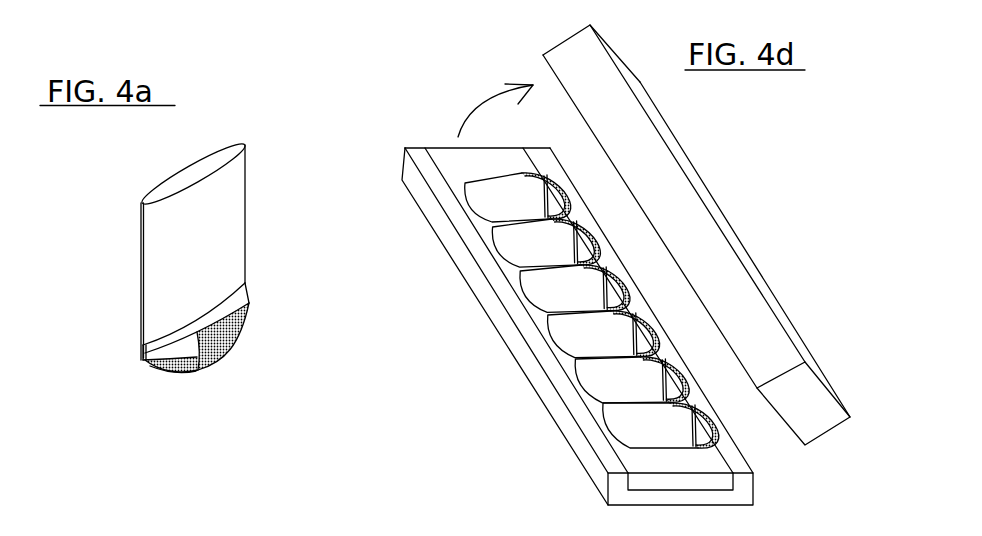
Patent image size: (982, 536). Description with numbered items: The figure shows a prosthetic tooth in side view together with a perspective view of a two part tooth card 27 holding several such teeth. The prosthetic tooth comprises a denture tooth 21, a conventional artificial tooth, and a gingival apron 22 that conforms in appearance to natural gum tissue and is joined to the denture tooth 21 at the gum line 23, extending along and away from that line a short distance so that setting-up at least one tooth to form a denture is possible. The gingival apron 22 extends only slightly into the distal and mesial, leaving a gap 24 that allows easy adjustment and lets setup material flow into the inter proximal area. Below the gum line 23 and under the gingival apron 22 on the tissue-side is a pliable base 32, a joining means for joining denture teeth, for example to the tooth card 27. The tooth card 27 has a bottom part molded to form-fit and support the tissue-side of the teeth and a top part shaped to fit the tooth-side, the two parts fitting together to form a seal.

In FIG. 4A, the denture tooth 21 is at (230, 203).
In FIG. 4A, the gingival apron 22 is at (187, 378).
In FIG. 4A, the gum line 23 is at (247, 282).
In FIG. 4A, the gap 24 is at (140, 350).
In FIG. 4D, the tooth card 27 is at (538, 376).
In FIG. 4A, the pliable base 32 is at (230, 337).
In FIG. 4D, the pliable base 32 is at (710, 428).